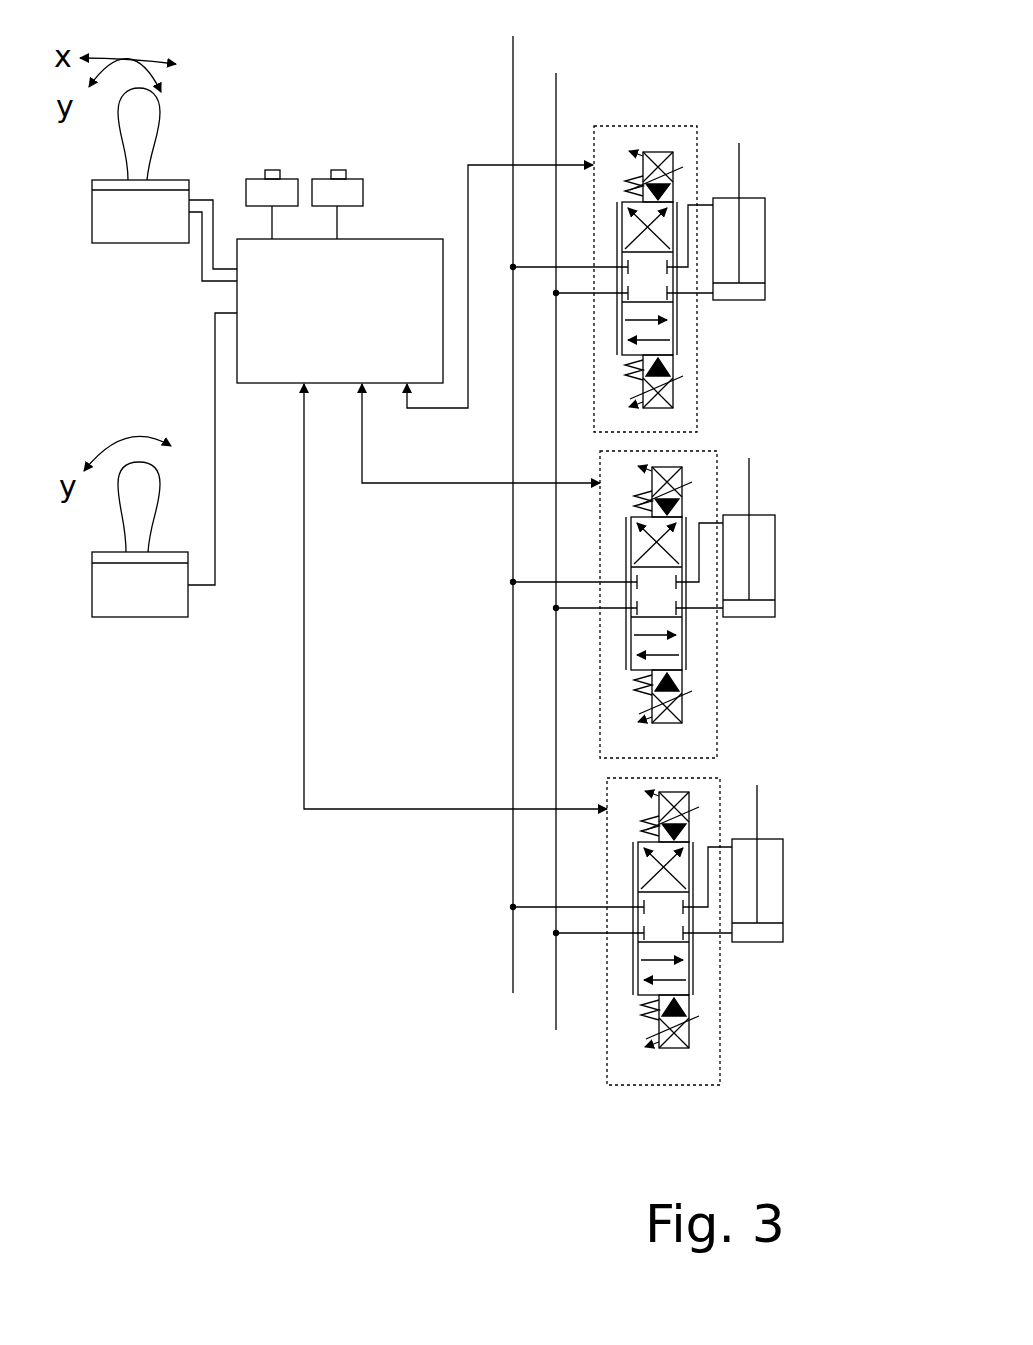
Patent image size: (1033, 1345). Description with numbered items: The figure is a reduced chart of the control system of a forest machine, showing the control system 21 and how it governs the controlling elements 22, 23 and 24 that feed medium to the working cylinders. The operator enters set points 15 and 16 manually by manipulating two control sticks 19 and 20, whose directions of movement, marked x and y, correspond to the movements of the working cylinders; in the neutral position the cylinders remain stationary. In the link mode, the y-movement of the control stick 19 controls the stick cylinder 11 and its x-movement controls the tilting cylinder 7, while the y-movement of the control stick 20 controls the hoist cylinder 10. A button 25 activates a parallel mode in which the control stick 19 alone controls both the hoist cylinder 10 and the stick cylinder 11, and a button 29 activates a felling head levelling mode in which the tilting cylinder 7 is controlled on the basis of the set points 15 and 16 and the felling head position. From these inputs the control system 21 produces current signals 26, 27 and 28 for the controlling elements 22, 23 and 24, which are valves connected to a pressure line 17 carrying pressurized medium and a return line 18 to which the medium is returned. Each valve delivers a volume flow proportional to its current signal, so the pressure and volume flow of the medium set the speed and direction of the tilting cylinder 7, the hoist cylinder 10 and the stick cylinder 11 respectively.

The tilting cylinder 7 is at (753, 217).
The hoist cylinder 10 is at (762, 535).
The stick cylinder 11 is at (770, 857).
The set point 15 is at (189, 271).
The set point 16 is at (216, 599).
The pressure line 17 is at (513, 63).
The return line 18 is at (556, 93).
The control stick 19 is at (102, 233).
The control stick 20 is at (126, 607).
The control system 21 is at (387, 239).
The controlling element 22 is at (682, 324).
The controlling element 23 is at (692, 658).
The controlling element 24 is at (697, 987).
The button 25 is at (272, 170).
The current signal 26 is at (438, 425).
The current signal 27 is at (372, 495).
The current signal 28 is at (295, 768).
The button 29 is at (337, 170).